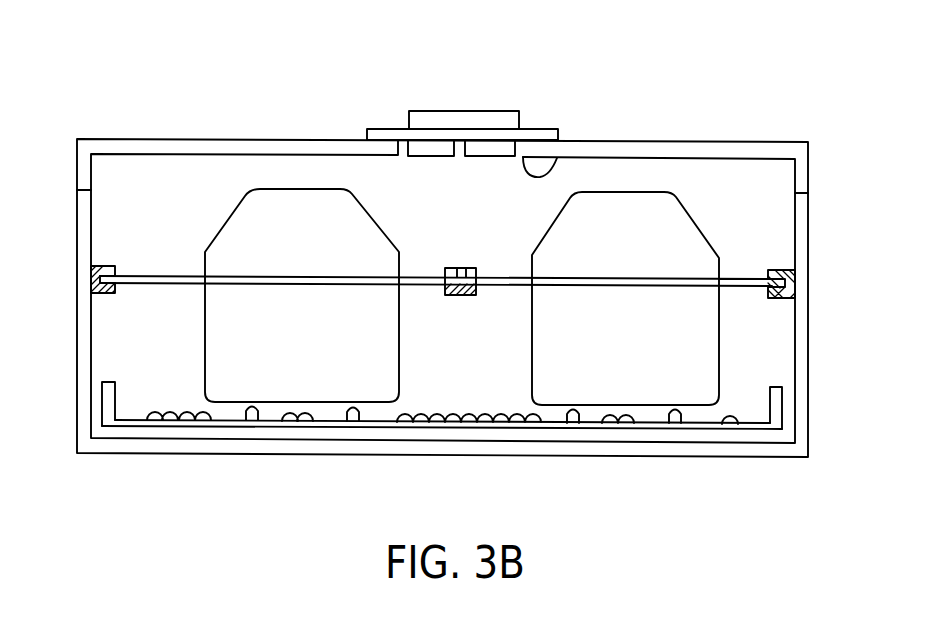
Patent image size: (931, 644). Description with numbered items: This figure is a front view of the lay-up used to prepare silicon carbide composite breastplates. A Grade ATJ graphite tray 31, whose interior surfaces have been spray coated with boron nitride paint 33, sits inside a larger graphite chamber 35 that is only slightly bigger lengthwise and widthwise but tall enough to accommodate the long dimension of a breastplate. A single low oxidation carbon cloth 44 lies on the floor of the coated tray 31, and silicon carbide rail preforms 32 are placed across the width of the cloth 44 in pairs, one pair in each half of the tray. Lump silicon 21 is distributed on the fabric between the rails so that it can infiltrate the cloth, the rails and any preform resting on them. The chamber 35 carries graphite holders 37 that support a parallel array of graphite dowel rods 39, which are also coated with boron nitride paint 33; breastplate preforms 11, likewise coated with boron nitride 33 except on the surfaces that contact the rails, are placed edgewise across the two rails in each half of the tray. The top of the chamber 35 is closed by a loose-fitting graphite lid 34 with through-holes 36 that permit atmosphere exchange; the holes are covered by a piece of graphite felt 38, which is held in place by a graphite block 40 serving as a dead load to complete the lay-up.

The breastplate preform 11 is at (242, 235).
The silicon 21 is at (437, 417).
The graphite tray 31 is at (130, 432).
The silicon carbide rail preform 32 is at (252, 413).
The boron nitride paint 33 is at (136, 270).
The graphite lid 34 is at (108, 139).
The graphite chamber 35 is at (785, 456).
The through-hole 36 is at (553, 175).
The graphite holder 37 is at (103, 296).
The graphite felt 38 is at (373, 130).
The graphite dowel rod 39 is at (753, 277).
The graphite block 40 is at (443, 118).
The carbon cloth 44 is at (730, 425).